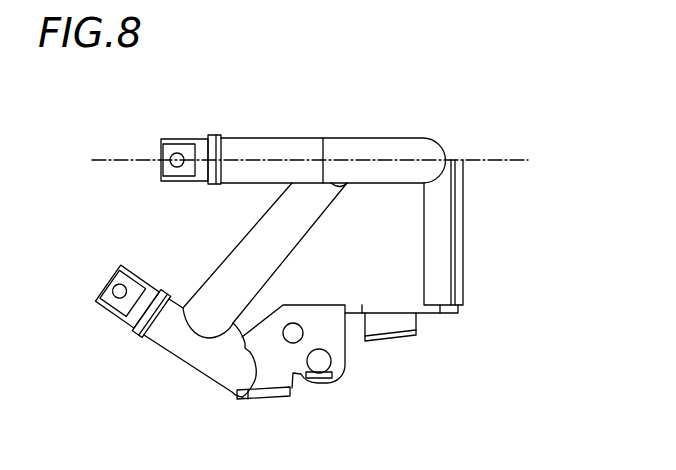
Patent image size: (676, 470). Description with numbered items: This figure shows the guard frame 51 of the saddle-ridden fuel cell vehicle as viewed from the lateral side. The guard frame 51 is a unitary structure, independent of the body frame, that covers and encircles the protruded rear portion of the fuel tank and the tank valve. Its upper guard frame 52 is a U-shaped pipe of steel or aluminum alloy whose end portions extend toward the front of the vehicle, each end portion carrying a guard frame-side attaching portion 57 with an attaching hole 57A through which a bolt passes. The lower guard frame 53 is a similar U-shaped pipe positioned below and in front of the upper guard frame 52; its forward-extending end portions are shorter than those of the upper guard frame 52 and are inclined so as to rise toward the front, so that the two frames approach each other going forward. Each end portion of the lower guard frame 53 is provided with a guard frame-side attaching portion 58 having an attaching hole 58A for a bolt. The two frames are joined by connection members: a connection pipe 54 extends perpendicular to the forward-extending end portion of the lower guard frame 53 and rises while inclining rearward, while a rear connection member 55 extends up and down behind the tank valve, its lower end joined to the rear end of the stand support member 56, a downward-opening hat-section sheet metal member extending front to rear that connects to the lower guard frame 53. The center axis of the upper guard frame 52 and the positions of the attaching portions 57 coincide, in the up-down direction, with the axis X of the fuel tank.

The guard frame 51 is at (470, 125).
The upper guard frame 52 is at (375, 145).
The lower guard frame 53 is at (207, 363).
The connection pipe 54 is at (250, 245).
The rear connection member 55 is at (438, 236).
The stand support member 56 is at (338, 358).
The guard frame-side attaching portion 57 is at (202, 139).
The attaching hole 57A is at (163, 170).
The guard frame-side attaching portion 58 is at (120, 318).
The attaching hole 58A is at (109, 277).
The axis X is at (112, 152).